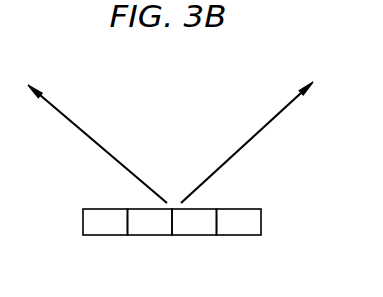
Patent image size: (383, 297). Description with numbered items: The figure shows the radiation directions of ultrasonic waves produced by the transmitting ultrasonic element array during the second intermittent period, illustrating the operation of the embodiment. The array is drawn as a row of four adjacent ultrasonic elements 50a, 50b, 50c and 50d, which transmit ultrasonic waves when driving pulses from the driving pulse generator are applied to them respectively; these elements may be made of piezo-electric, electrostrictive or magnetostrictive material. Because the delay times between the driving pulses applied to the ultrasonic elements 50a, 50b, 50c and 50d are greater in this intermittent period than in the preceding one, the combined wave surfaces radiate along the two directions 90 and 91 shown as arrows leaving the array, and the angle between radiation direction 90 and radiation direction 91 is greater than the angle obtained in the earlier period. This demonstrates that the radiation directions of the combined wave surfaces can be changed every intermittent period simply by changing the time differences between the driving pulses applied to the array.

The ultrasonic element 50a is at (113, 235).
The ultrasonic element 50b is at (165, 235).
The ultrasonic element 50c is at (209, 235).
The ultrasonic element 50d is at (253, 235).
The radiation direction 90 is at (97, 136).
The radiation direction 91 is at (247, 132).